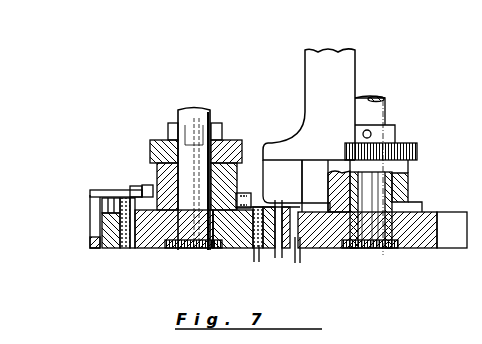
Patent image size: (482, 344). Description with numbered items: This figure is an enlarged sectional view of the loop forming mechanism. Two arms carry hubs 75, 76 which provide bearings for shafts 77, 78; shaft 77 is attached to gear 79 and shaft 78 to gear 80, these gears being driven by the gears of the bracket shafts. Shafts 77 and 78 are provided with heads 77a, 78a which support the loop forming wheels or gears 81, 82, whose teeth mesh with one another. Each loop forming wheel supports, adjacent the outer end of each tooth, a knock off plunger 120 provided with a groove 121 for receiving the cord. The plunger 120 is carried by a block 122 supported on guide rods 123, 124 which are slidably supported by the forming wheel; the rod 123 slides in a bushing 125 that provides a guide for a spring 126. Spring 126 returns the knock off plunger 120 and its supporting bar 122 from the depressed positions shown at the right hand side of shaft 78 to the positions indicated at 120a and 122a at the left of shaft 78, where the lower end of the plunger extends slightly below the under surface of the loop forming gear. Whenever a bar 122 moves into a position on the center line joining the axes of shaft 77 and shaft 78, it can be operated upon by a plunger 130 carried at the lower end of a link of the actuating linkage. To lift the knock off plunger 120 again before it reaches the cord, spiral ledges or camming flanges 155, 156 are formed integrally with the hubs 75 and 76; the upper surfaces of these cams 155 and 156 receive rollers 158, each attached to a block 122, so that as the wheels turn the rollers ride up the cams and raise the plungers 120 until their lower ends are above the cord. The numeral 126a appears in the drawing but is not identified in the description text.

The hub 75 is at (403, 182).
The hub 76 is at (160, 172).
The shaft 77 is at (368, 197).
The head 77a is at (375, 248).
The shaft 78 is at (183, 118).
The head 78a is at (175, 248).
The gear 79 is at (413, 141).
The gear 80 is at (150, 148).
The loop forming wheel or gear 81 is at (458, 243).
The loop forming wheel or gear 82 is at (112, 246).
The knock off plunger 120 is at (300, 248).
The returned position of knock off plunger 120a is at (90, 230).
The groove 121 is at (297, 263).
The block 122 is at (280, 207).
The returned position of block 122a is at (92, 193).
The guide rod 123 is at (257, 252).
The guide rod 124 is at (283, 256).
The bushing 125 is at (252, 224).
The spring 126 is at (250, 220).
The spring 126a is at (100, 210).
The plunger 130 is at (280, 122).
The spiral ledge or camming flange 155 is at (413, 207).
The spiral ledge or camming flange 156 is at (133, 197).
The roller 158 is at (147, 182).